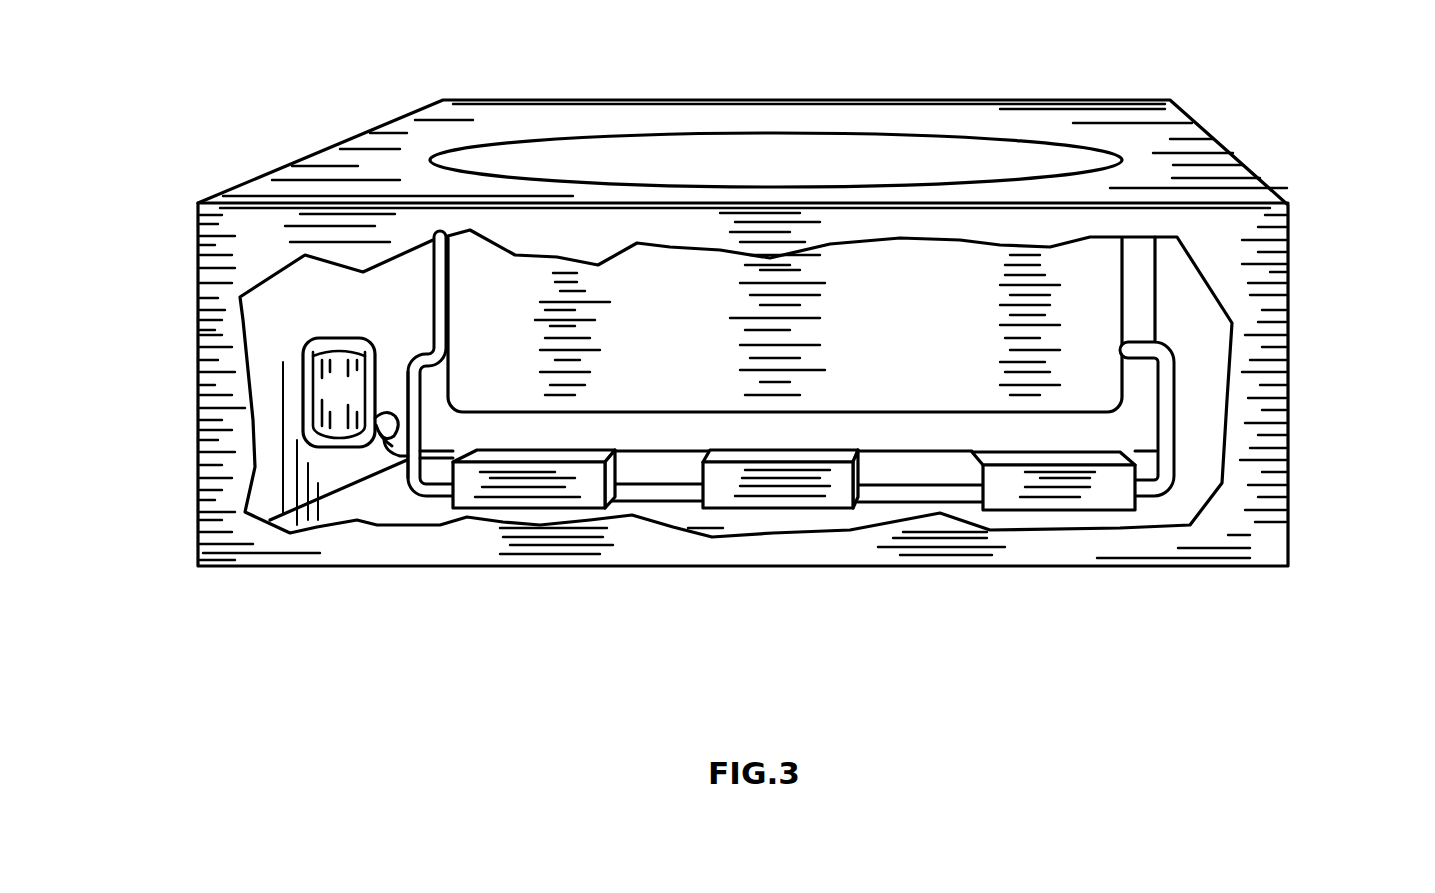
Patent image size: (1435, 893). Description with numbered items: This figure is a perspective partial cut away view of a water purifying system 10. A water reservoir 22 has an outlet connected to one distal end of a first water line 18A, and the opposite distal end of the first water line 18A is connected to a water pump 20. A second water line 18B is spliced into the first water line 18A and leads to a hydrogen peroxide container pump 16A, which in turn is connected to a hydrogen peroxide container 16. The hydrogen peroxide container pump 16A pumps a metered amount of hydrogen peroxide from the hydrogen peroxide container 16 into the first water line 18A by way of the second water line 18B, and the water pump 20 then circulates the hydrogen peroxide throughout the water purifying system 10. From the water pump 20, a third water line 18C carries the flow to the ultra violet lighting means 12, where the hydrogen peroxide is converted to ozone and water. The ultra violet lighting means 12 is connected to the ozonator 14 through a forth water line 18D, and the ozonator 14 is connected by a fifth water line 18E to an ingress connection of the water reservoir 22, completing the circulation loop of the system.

The water purifying system 10 is at (774, 32).
The ultra violet lighting means 12 is at (832, 497).
The ozonator 14 is at (1050, 488).
The hydrogen peroxide container 16 is at (338, 411).
The hydrogen peroxide container pump 16A is at (383, 433).
The first water line 18A is at (437, 497).
The second water line 18B is at (395, 460).
The third water line 18C is at (656, 495).
The forth water line 18D is at (928, 493).
The fifth water line 18E is at (1168, 438).
The water pump 20 is at (513, 492).
The water reservoir 22 is at (774, 173).